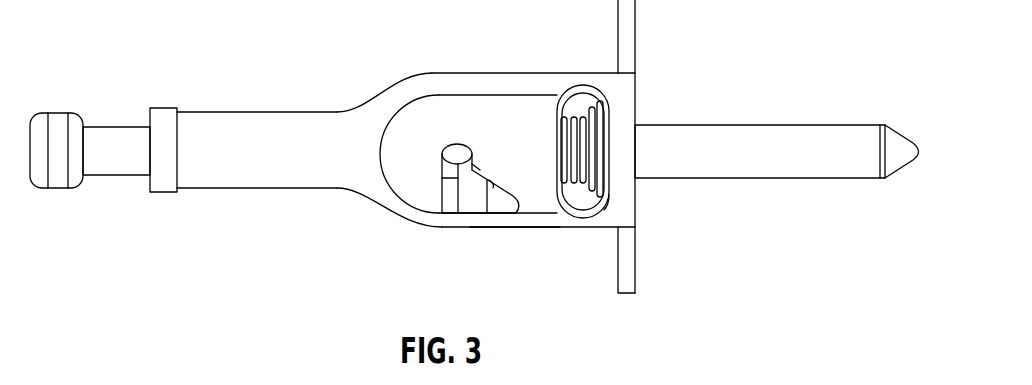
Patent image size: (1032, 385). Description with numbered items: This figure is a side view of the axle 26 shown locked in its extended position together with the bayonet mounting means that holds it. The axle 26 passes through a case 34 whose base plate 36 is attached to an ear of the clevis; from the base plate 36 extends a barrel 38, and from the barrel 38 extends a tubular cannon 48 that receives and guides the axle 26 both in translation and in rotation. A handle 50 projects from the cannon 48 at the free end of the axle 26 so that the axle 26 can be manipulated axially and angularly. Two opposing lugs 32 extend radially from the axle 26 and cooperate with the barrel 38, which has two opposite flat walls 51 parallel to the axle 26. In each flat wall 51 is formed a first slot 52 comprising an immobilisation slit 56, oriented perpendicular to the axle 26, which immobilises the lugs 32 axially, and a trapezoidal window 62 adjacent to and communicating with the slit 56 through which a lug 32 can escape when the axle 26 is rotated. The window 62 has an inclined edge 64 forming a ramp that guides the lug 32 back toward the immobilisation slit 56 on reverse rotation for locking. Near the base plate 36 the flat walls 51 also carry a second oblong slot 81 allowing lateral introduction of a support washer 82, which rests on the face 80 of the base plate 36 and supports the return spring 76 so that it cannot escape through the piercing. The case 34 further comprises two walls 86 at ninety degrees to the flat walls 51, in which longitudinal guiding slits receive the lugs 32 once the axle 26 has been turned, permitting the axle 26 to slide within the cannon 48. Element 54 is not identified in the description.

The axle 26 is at (827, 180).
The lugs 32 is at (453, 158).
The case 34 is at (478, 238).
The base plate 36 is at (628, 277).
The barrel 38 is at (530, 224).
The tubular cannon 48 is at (263, 190).
The handle 50 is at (58, 190).
The flat walls 51 is at (424, 93).
The first slot 52 is at (443, 180).
The cam surface 54 is at (481, 165).
The immobilisation slit 56 is at (410, 121).
The window 62 is at (448, 213).
The inclined edge 64 is at (497, 183).
The return spring 76 is at (597, 114).
The face 80 is at (608, 148).
The second oblong slot 81 is at (610, 203).
The support washer 82 is at (604, 118).
The walls 86 is at (479, 73).